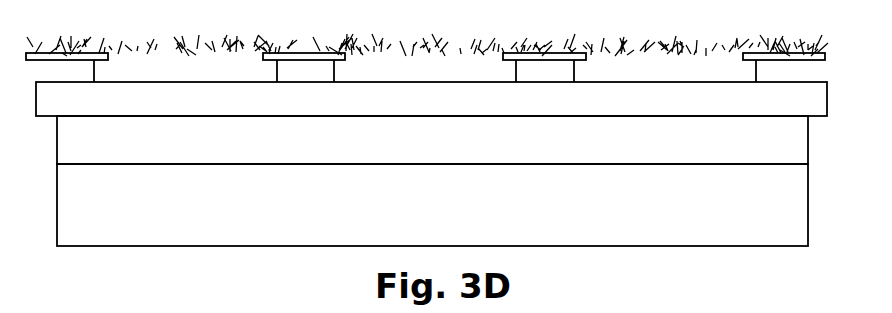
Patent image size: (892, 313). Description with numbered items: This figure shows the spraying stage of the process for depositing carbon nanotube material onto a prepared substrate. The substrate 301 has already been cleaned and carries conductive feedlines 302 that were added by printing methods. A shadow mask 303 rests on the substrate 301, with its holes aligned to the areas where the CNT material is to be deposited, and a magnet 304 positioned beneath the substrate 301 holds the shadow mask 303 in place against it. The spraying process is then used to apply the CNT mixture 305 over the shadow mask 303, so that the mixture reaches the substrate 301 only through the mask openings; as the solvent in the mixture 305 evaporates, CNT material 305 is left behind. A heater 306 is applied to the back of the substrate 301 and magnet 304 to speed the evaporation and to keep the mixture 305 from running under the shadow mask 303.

The substrate 301 is at (829, 107).
The feedlines 302 is at (665, 51).
The shadow mask 303 is at (557, 51).
The magnet 304 is at (809, 148).
The CNT mixture 305 is at (466, 37).
The heater 306 is at (578, 241).